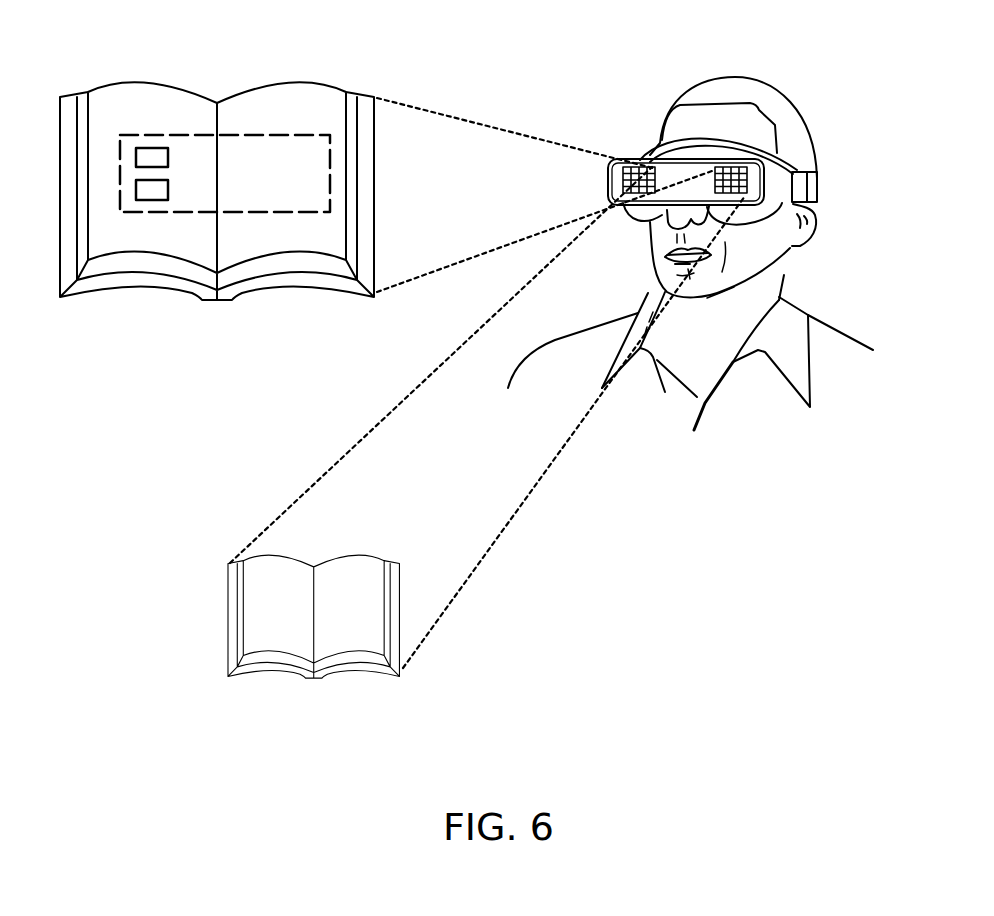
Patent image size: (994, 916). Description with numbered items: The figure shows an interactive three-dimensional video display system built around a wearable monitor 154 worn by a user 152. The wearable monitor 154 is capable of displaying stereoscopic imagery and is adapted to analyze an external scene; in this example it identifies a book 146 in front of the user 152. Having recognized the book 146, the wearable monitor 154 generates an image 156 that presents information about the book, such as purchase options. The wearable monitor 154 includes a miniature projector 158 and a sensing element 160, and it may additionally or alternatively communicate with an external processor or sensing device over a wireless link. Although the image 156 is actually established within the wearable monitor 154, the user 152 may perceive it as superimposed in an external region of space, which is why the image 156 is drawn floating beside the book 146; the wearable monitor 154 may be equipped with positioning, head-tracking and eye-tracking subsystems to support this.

The book 146 is at (275, 673).
The user 152 is at (713, 79).
The wearable monitor 154 is at (790, 170).
The image 156 is at (257, 82).
The miniature projector 158 is at (625, 158).
The sensing element 160 is at (743, 167).